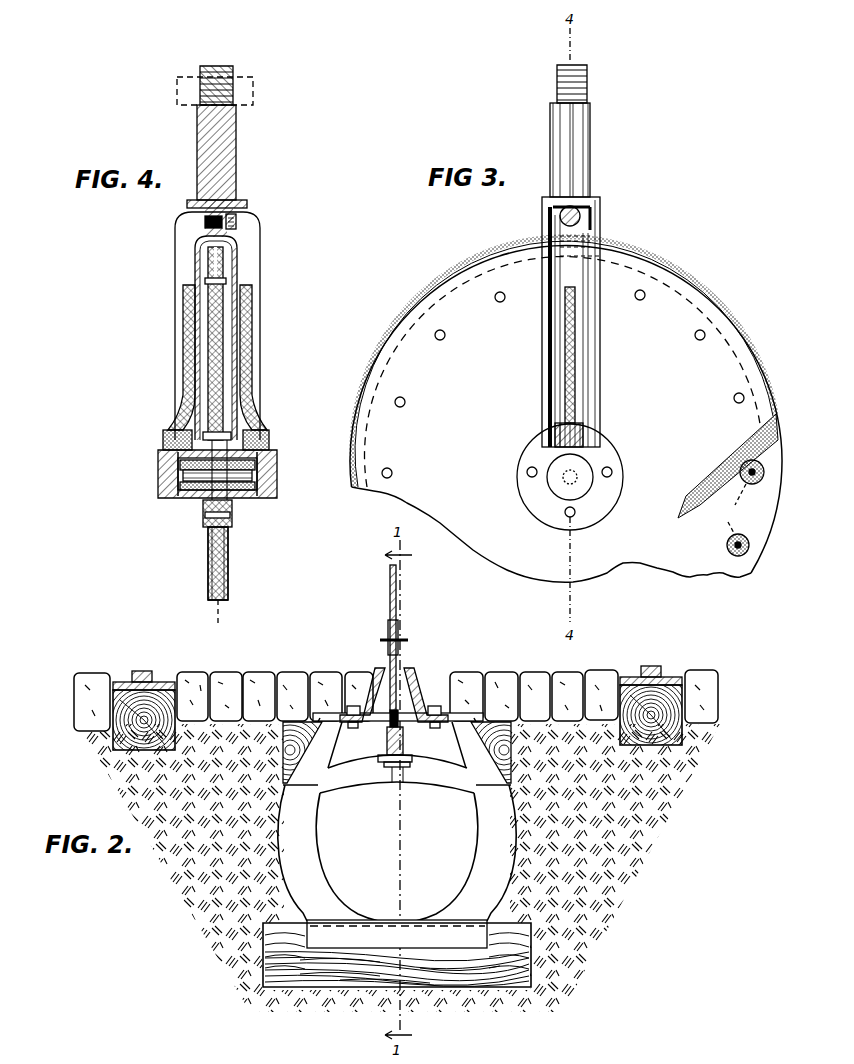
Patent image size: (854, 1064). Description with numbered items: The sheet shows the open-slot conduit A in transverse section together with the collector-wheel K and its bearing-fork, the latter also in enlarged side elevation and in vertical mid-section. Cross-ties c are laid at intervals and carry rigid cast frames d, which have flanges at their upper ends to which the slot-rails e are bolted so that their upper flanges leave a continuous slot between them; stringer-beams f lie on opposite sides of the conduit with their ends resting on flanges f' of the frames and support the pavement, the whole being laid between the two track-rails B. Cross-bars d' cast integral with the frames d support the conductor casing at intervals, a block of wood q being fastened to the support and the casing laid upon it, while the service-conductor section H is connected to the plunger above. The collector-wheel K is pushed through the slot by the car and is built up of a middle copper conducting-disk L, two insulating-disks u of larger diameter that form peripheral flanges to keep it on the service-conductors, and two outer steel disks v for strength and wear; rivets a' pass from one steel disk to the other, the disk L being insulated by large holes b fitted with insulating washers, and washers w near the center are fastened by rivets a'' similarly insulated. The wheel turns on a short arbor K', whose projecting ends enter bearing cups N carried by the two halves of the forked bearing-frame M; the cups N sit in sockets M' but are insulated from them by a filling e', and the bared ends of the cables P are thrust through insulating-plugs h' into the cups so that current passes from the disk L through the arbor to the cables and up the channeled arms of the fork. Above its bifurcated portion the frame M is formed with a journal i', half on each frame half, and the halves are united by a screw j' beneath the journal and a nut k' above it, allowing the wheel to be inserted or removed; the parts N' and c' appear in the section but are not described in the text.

In FIG. 4, the nut k' is at (228, 90).
In FIG. 4, the journal i' is at (224, 144).
In FIG. 3, the journal i' is at (578, 131).
In FIG. 4, the screw j' is at (239, 215).
In FIG. 4, the rivets a' is at (242, 343).
In FIG. 3, the rivets a' is at (577, 433).
In FIG. 4, the forked bearing-frame M is at (200, 326).
In FIG. 3, the forked bearing-frame M is at (587, 322).
In FIG. 4, the conducting cables P is at (183, 385).
In FIG. 3, the conducting cables P is at (577, 362).
In FIG. 4, the insulating-plugs h' is at (229, 422).
In FIG. 3, the insulating-plugs h' is at (585, 425).
In FIG. 4, the sockets M' is at (217, 465).
In FIG. 3, the sockets M' is at (582, 477).
In FIG. 4, the insulating-filling e' is at (224, 478).
In FIG. 4, the bearing cups N is at (245, 477).
In FIG. 4, the arbor K' is at (190, 478).
In FIG. 4, the washer N' is at (197, 507).
In FIG. 4, the stem c' is at (246, 481).
In FIG. 4, the rivets a'' is at (235, 550).
In FIG. 3, the rivets a'' is at (552, 489).
In FIG. 4, the washers w is at (205, 516).
In FIG. 3, the washers w is at (565, 482).
In FIG. 4, the collector-wheel K is at (206, 563).
In FIG. 3, the collector-wheel K is at (566, 409).
In FIG. 2, the collector-wheel K is at (383, 640).
In FIG. 4, the steel disks v is at (240, 575).
In FIG. 3, the steel disks v is at (665, 398).
In FIG. 4, the insulating-disks u is at (236, 606).
In FIG. 3, the insulating-disks u is at (710, 295).
In FIG. 4, the conducting-disk L is at (216, 622).
In FIG. 3, the conducting-disk L is at (692, 544).
In FIG. 3, the large holes b is at (733, 509).
In FIG. 2, the track-rails B is at (142, 671).
In FIG. 2, the slot-rails e is at (394, 683).
In FIG. 2, the open-slot conduit A is at (396, 858).
In FIG. 2, the cross-bars d' is at (397, 790).
In FIG. 2, the cast frames d is at (430, 811).
In FIG. 2, the service-conductor section H is at (389, 718).
In FIG. 2, the cross-ties c is at (417, 857).
In FIG. 2, the block of wood q is at (412, 758).
In FIG. 2, the stringer-beams f is at (397, 750).
In FIG. 2, the flanges f' is at (397, 819).